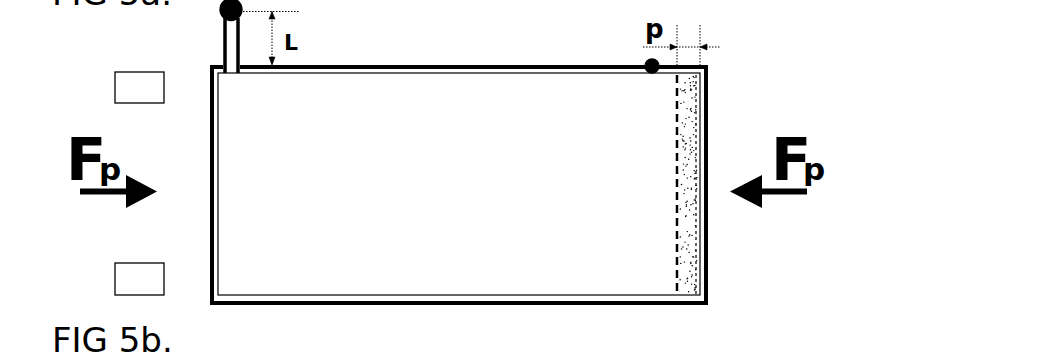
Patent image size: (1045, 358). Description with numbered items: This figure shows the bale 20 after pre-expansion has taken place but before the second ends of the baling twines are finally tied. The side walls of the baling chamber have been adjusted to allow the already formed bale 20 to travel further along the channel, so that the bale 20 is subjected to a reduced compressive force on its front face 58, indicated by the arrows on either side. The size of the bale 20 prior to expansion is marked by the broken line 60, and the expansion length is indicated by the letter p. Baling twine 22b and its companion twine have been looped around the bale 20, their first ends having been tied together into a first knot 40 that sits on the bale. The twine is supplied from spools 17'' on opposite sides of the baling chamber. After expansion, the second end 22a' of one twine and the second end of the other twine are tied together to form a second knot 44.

The front face 58 is at (707, 263).
The bale 20 is at (476, 187).
The broken line 60 is at (673, 138).
The first knot 40 is at (645, 62).
The second end of twine 22a' is at (272, 80).
The baling twine 22b is at (242, 4).
The spool 17'' is at (115, 159).
The second knot 44 is at (412, 349).